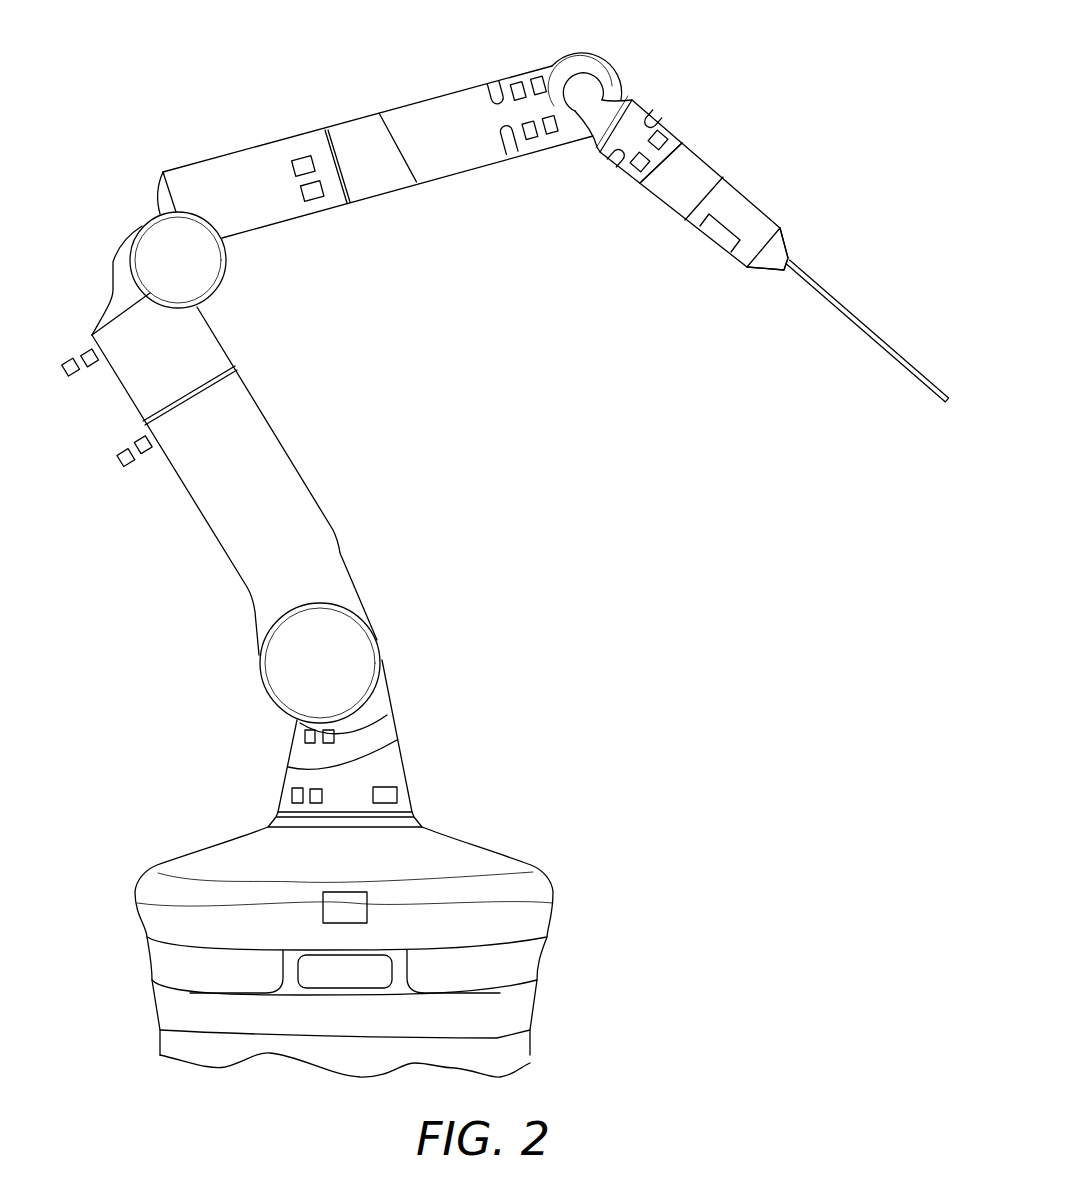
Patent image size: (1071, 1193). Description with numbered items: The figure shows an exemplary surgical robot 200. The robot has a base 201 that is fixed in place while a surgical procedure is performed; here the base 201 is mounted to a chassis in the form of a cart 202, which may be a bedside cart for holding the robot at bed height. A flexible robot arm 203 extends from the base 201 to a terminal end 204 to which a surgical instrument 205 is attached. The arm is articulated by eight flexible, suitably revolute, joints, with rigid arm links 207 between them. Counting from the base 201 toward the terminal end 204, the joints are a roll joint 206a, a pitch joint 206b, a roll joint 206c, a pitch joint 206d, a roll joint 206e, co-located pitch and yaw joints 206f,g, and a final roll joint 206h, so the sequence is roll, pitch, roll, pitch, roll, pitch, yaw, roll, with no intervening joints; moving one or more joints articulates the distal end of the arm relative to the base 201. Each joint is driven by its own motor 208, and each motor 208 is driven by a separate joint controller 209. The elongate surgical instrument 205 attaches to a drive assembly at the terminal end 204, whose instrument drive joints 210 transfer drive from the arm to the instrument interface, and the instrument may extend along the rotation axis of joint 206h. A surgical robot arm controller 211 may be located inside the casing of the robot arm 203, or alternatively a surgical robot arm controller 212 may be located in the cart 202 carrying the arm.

The surgical robot 200 is at (580, 412).
The base 201 is at (418, 822).
The cart 202 is at (530, 1048).
The robot arm 203 is at (86, 440).
The terminal end 204 is at (790, 250).
The surgical instrument 205 is at (872, 318).
The roll joint 206a is at (277, 815).
The pitch joint 206b is at (358, 650).
The roll joint 206c is at (240, 372).
The pitch joint 206d is at (160, 240).
The roll joint 206e is at (330, 127).
The pitch joint and yaw joint 206f,g is at (593, 70).
The roll joint 206h is at (690, 135).
The arm link 207 is at (222, 170).
The motor 208 is at (298, 155).
The joint controller 209 is at (316, 207).
The instrument drive joint 210 is at (703, 233).
The surgical robot arm controller 211 is at (397, 787).
The surgical robot arm controller 212 is at (367, 915).